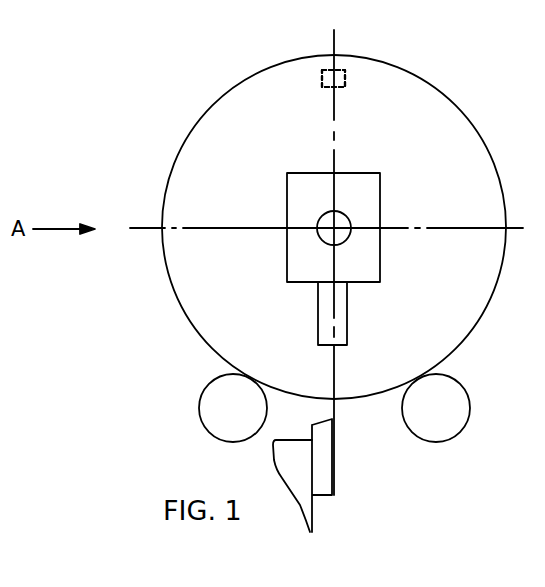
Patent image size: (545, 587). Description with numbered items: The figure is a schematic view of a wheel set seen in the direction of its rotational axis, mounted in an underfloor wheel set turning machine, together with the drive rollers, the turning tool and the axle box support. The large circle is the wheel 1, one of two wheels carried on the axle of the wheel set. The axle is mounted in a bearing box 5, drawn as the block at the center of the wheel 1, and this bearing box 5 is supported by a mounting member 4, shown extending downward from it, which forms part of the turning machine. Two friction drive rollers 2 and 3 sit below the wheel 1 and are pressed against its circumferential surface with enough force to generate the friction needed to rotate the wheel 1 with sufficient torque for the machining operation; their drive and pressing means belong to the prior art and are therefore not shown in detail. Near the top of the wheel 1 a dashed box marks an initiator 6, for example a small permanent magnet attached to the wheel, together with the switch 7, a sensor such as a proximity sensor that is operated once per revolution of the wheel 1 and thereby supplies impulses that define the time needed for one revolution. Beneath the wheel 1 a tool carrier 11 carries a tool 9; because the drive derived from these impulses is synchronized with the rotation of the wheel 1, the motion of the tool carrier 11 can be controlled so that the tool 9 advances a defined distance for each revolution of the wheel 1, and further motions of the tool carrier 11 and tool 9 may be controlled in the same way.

The wheel 1 is at (445, 56).
The friction drive roller 2 is at (207, 431).
The friction drive roller 3 is at (442, 441).
The mounting member 4 is at (323, 309).
The bearing box 5 is at (381, 259).
The initiator 6 is at (316, 78).
The switch 7 is at (333, 78).
The tool 9 is at (322, 453).
The tool carrier 11 is at (298, 450).